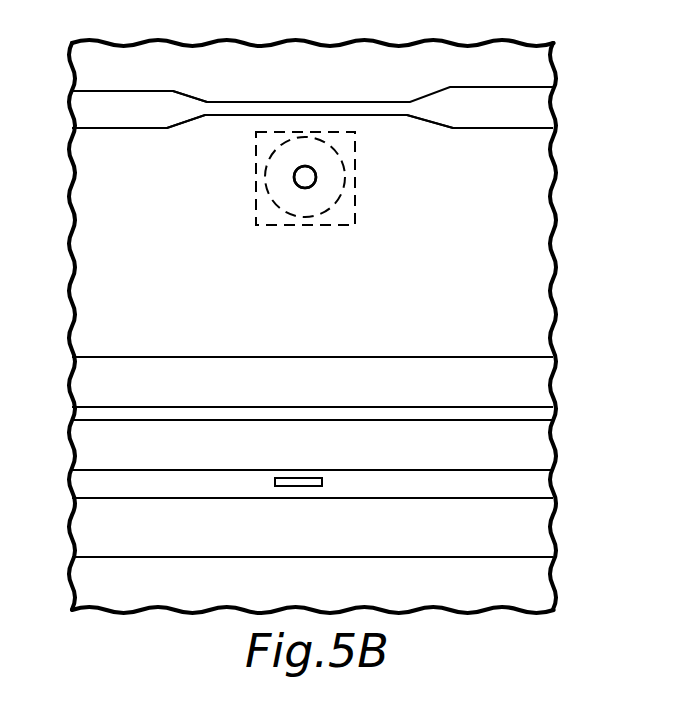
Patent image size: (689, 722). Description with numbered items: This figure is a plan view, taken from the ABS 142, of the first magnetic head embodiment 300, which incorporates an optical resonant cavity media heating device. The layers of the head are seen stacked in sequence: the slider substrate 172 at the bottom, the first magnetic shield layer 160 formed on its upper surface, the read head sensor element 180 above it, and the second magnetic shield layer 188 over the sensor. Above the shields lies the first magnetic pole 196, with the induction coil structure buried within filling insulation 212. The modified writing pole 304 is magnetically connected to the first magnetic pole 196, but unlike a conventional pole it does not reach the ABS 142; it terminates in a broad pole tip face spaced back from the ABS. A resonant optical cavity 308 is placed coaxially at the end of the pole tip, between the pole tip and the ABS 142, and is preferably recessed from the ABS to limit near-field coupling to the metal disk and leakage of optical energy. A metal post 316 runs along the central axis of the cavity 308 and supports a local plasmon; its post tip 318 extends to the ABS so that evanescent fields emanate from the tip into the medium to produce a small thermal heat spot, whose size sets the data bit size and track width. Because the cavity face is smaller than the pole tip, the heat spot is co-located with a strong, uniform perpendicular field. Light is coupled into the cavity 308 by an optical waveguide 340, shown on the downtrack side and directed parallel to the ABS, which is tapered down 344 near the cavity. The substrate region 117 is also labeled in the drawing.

The magnetic head embodiment 300 is at (402, 37).
The tapered-down portion of optical waveguide 344 is at (185, 106).
The optical waveguide 340 is at (521, 100).
The metal post 316 is at (313, 169).
The post tip end 318 is at (294, 177).
The resonant optical cavity 308 is at (356, 170).
The writing pole 304 is at (333, 226).
The filling insulation 212 is at (511, 212).
The air bearing surface (ABS) 142 is at (508, 334).
The first magnetic pole 196 is at (508, 391).
The read head sensor element 180 is at (300, 478).
The second magnetic shield layer 188 is at (506, 455).
The first magnetic shield layer 160 is at (451, 539).
The slider substrate 172 is at (468, 597).
The substrate 117 is at (218, 594).